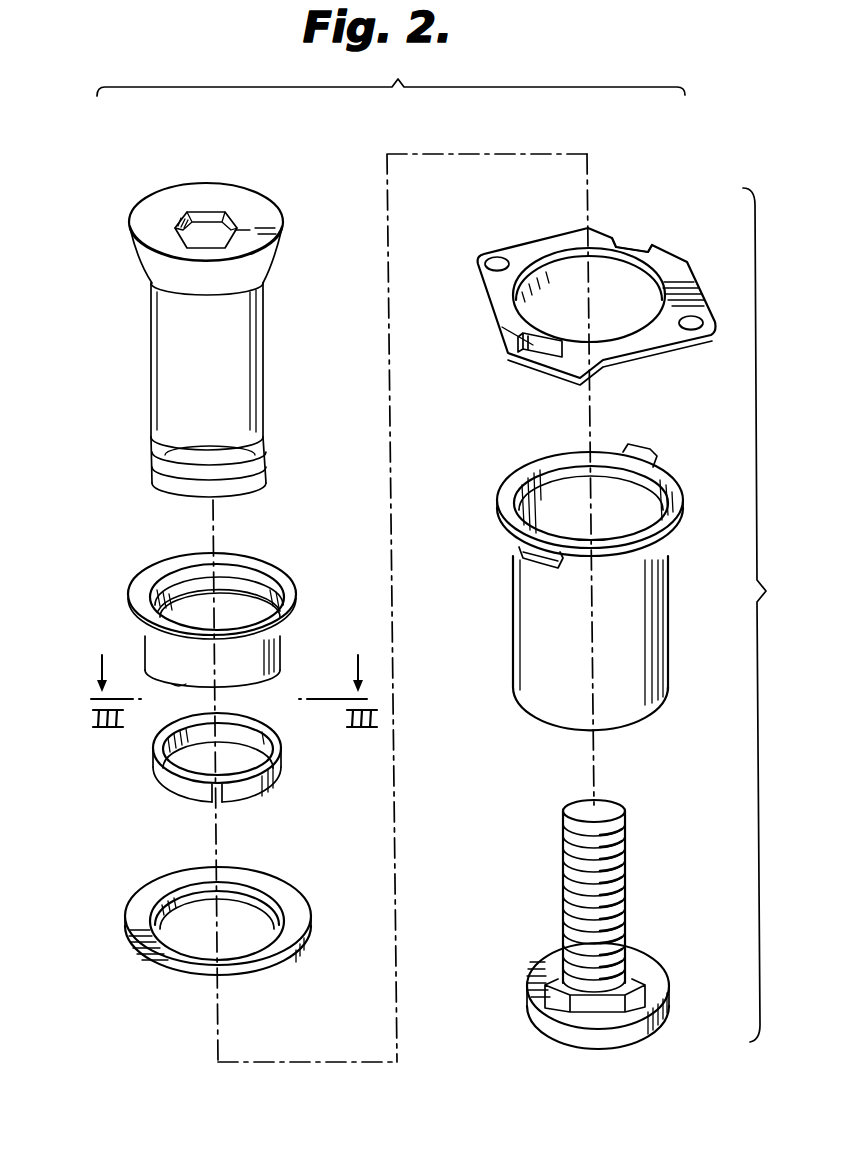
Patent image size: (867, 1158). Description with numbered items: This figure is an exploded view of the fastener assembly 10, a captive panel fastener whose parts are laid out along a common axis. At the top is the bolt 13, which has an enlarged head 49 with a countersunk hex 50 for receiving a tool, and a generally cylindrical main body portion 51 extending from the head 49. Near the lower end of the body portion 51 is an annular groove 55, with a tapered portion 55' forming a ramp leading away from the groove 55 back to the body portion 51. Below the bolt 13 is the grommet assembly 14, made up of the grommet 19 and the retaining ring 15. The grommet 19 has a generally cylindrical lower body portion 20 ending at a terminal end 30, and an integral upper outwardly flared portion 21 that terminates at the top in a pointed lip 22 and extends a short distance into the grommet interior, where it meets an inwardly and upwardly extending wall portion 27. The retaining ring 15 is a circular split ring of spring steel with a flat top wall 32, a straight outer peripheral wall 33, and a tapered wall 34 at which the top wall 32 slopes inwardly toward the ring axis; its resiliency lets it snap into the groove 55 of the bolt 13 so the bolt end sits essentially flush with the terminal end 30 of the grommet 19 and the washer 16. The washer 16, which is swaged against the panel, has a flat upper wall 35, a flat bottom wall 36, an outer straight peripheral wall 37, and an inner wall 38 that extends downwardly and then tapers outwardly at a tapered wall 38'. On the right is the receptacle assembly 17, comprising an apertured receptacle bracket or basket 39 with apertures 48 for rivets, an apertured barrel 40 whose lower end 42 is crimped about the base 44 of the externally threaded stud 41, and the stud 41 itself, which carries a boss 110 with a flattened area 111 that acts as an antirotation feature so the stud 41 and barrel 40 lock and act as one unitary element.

The fastener assembly 10 is at (391, 75).
The bolt 13 is at (201, 317).
The grommet assembly 14 is at (247, 601).
The retaining ring 15 is at (202, 780).
The washer 16 is at (219, 970).
The receptacle assembly 17 is at (770, 615).
The grommet 19 is at (283, 651).
The lower body portion 20 is at (215, 669).
The upper outwardly flared portion 21 is at (162, 584).
The pointed lip 22 is at (285, 576).
The inwardly and upwardly extending wall portion 27 is at (230, 580).
The terminal end of grommet 30 is at (172, 684).
The flat top wall 32 is at (163, 748).
The straight outer peripheral wall 33 is at (265, 786).
The tapered wall 34 is at (272, 740).
The flat upper wall 35 is at (300, 924).
The flat bottom wall 36 is at (142, 975).
The outer straight peripheral wall 37 is at (276, 974).
The inner wall 38 is at (179, 921).
The tapered wall 38' is at (251, 890).
The receptacle bracket or basket 39 is at (582, 295).
The barrel 40 is at (583, 591).
The externally threaded stud 41 is at (597, 953).
The lower end of barrel 42 is at (552, 728).
The base of stud 44 is at (620, 1040).
The apertures 48 is at (495, 258).
The enlarged head 49 is at (262, 216).
The countersunk hex 50 is at (205, 237).
The main body portion 51 is at (247, 324).
The annular groove 55 is at (241, 467).
The tapered portion 55' is at (170, 416).
The boss 110 is at (638, 965).
The flattened area 111 is at (585, 1007).